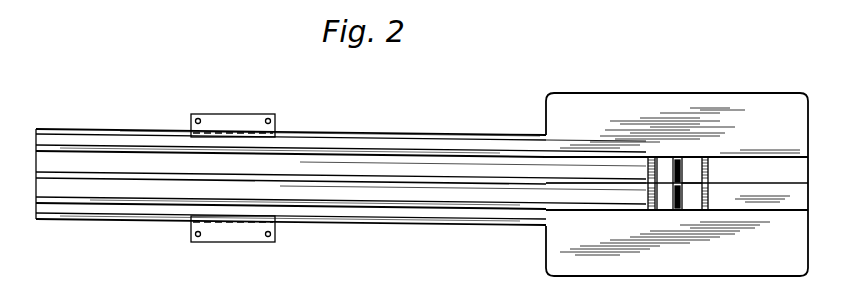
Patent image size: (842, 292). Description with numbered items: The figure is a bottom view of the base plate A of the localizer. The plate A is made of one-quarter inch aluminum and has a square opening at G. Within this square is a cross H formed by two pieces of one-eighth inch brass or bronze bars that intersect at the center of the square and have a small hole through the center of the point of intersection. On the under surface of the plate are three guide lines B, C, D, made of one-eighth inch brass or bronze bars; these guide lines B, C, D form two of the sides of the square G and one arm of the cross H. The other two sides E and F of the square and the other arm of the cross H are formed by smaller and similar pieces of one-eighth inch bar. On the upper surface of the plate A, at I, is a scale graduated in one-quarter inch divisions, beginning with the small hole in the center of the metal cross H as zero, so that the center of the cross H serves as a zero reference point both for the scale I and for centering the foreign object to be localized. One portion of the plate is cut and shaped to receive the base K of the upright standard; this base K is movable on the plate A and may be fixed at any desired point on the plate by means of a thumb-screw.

The base plate A is at (592, 105).
The guide line B is at (572, 210).
The guide line C is at (562, 182).
The guide line D is at (563, 157).
The side of the square E is at (647, 171).
The side of the square F is at (708, 170).
The square opening G is at (703, 195).
The cross H is at (685, 183).
The scale I is at (397, 140).
The base K is at (217, 117).